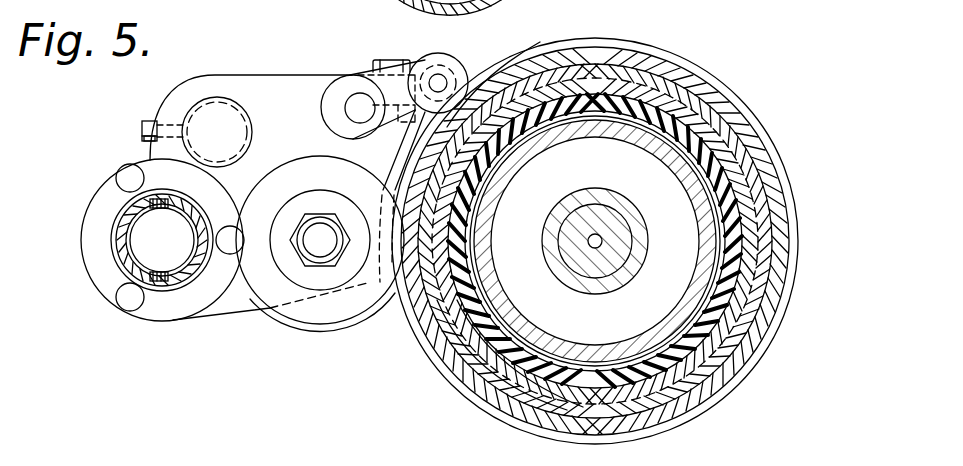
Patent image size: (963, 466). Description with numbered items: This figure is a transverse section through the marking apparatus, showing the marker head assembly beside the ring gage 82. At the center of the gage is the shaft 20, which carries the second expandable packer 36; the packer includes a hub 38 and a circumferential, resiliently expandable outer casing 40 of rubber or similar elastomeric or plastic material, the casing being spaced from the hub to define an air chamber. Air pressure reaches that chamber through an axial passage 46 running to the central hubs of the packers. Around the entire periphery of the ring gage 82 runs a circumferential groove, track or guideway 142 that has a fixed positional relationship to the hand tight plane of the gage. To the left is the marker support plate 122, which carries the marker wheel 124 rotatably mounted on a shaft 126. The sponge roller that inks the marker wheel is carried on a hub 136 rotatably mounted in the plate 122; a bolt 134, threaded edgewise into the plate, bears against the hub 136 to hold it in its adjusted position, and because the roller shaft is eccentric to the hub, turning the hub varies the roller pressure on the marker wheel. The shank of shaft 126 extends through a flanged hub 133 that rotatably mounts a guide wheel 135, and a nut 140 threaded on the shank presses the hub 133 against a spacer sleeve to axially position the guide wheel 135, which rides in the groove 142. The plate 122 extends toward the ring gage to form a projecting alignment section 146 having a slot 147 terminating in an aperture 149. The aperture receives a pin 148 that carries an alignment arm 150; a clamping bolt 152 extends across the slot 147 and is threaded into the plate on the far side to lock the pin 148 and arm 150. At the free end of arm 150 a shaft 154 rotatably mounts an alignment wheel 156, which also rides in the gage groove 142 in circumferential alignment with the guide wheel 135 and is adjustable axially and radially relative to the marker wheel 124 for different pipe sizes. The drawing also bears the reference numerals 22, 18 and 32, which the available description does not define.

The brake assembly 22 is at (730, 40).
The brake band 18 is at (745, 172).
The shaft 20 is at (604, 208).
The second expandable packer 36 is at (743, 122).
The hub 38 is at (603, 292).
The outer casing 40 is at (740, 221).
The axial passage 46 is at (603, 239).
The ring gage 82 is at (778, 298).
The groove 142 is at (746, 377).
The mounting bracket 32 is at (243, 356).
The marker support plate 122 is at (233, 309).
The marker wheel 124 is at (320, 338).
The shaft 126 is at (308, 228).
The flanged hub 133 is at (338, 174).
The bolt 134 is at (141, 128).
The guide wheel 135 is at (350, 319).
The hub 136 is at (244, 95).
The nut 140 is at (291, 238).
The alignment section 146 is at (283, 75).
The slot 147 is at (404, 133).
The pin 148 is at (357, 94).
The aperture 149 is at (322, 114).
The alignment arm 150 is at (322, 76).
The clamping bolt 152 is at (394, 60).
The shaft 154 is at (439, 74).
The alignment wheel 156 is at (460, 62).